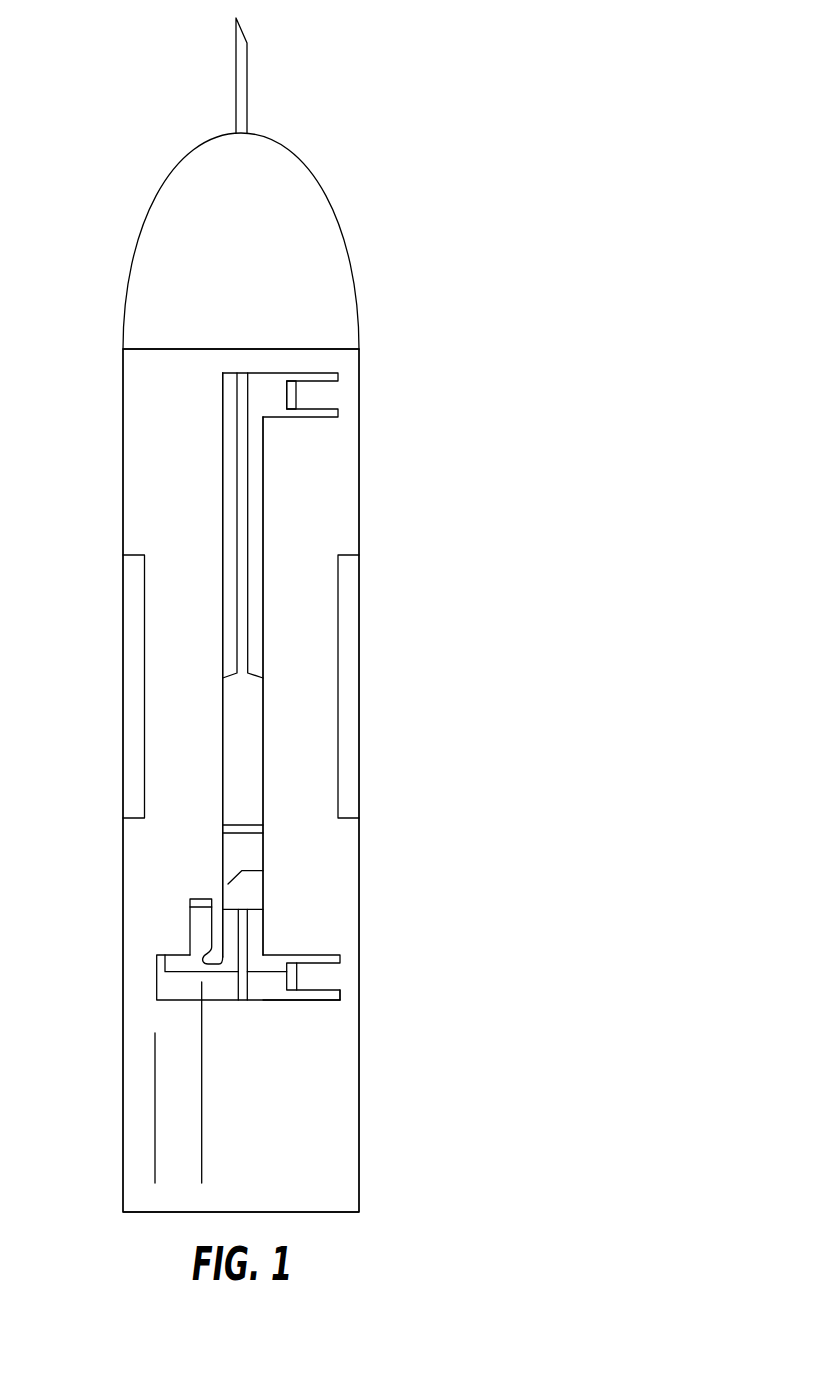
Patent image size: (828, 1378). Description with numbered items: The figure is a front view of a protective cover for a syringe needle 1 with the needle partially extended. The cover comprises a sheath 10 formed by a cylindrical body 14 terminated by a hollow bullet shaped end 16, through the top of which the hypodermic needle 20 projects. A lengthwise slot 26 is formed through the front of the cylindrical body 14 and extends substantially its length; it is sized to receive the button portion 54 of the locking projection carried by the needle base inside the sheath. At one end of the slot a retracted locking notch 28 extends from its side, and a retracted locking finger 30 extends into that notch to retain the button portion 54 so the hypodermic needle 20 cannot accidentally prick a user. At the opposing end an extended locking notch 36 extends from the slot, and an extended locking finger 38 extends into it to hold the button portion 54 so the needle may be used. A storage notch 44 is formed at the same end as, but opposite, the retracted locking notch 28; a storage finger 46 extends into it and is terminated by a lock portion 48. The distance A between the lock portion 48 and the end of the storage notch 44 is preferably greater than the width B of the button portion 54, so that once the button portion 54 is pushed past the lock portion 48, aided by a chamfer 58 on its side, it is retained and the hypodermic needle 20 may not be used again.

The protective cover for a syringe needle 1 is at (460, 360).
The sheath 10 is at (395, 705).
The cylindrical body 14 is at (359, 882).
The hollow bullet shaped end 16 is at (332, 212).
The hypodermic needle 20 is at (247, 80).
The lengthwise slot 26 is at (263, 475).
The retracted locking notch 28 is at (327, 1000).
The retracted locking finger 30 is at (330, 980).
The extended locking notch 36 is at (319, 373).
The extended locking finger 38 is at (332, 393).
The storage notch 44 is at (177, 1000).
The storage finger 46 is at (217, 930).
The lock portion 48 is at (197, 960).
The button portion 54 is at (230, 884).
The chamfer 58 is at (238, 897).
The distance A is at (277, 1162).
The width B is at (157, 783).